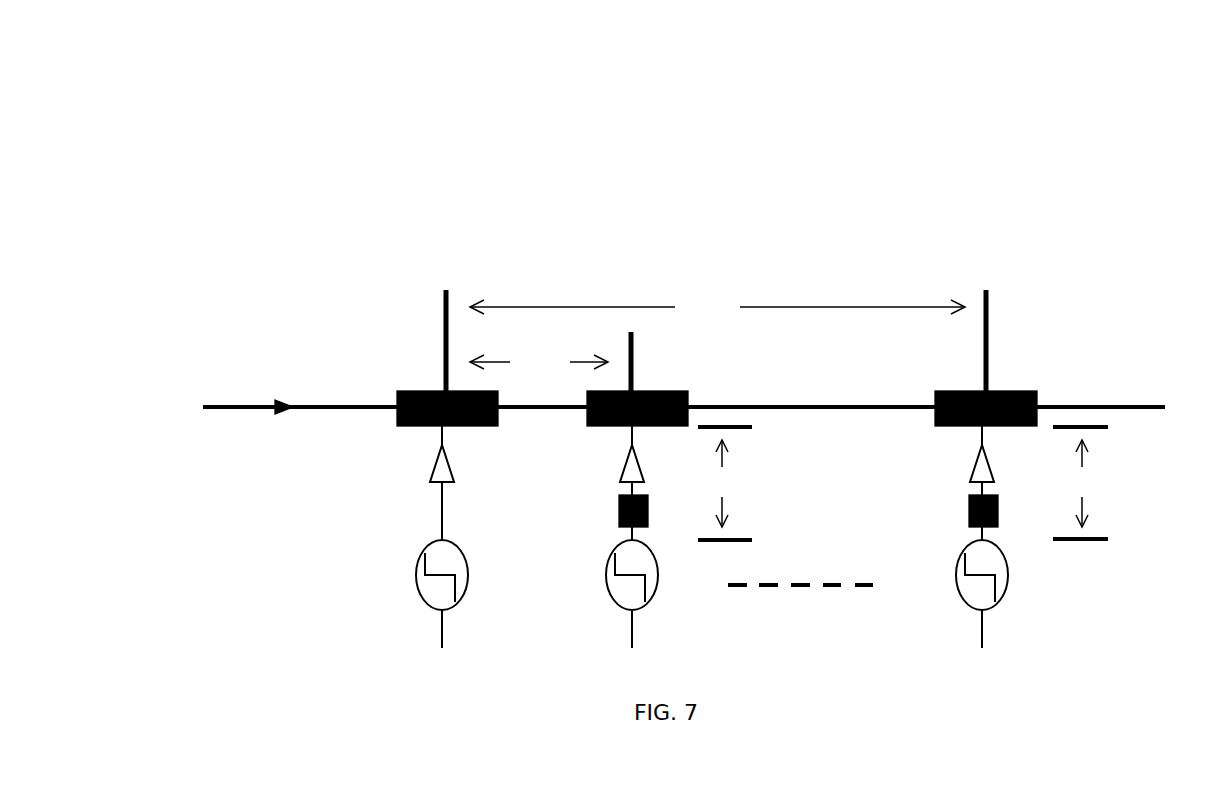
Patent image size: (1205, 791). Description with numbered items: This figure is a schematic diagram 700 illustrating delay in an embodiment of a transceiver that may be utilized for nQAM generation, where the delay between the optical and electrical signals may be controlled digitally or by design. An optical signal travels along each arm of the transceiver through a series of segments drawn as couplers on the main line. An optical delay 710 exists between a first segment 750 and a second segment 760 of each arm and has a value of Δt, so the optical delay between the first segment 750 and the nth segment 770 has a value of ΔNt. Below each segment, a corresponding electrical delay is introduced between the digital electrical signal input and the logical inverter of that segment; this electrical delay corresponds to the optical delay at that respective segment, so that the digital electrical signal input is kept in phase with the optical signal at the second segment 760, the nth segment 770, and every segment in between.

The schematic diagram 700 is at (132, 95).
The optical delay 710 is at (633, 341).
The first segment 750 is at (397, 413).
The second segment 760 is at (688, 398).
The nth segment 770 is at (1037, 396).